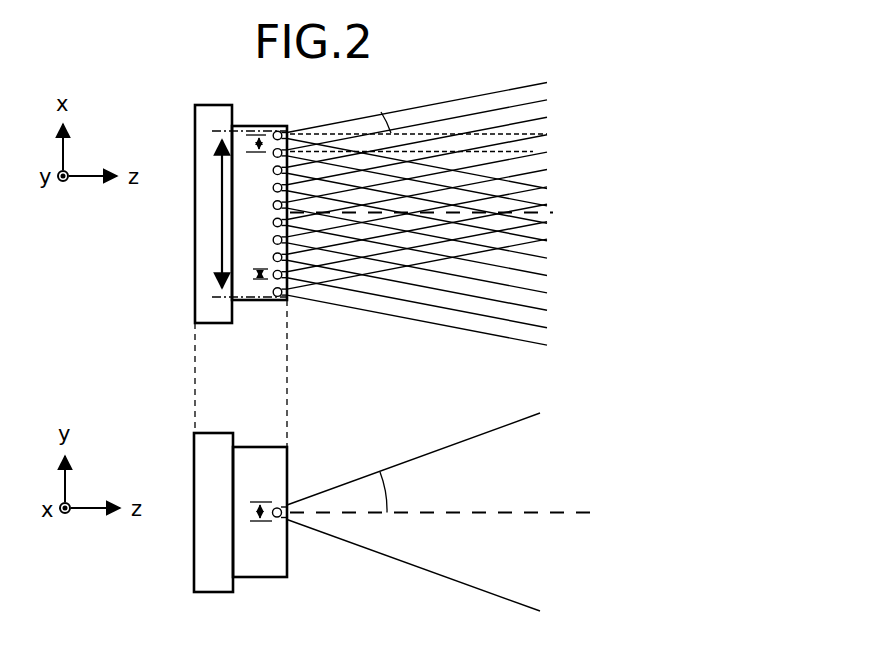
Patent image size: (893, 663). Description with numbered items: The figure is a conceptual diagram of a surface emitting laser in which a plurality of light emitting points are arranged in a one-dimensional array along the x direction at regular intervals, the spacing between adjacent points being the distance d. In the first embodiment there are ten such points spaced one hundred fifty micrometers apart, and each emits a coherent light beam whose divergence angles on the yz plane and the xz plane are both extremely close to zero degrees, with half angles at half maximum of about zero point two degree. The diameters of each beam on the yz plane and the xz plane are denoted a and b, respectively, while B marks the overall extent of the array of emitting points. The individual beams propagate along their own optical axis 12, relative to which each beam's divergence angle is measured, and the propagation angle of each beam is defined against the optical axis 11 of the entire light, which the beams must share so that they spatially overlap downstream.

The optical axis of the entire light 11 is at (555, 211).
The optical axis of each coherent light beam 12 is at (548, 134).
The width of the emitter array B is at (212, 214).
The distance between the light emitting points d is at (250, 141).
The diameter of the coherent light beam on the xz plane b is at (251, 273).
The diameter of the coherent light beam on the yz plane a is at (254, 511).